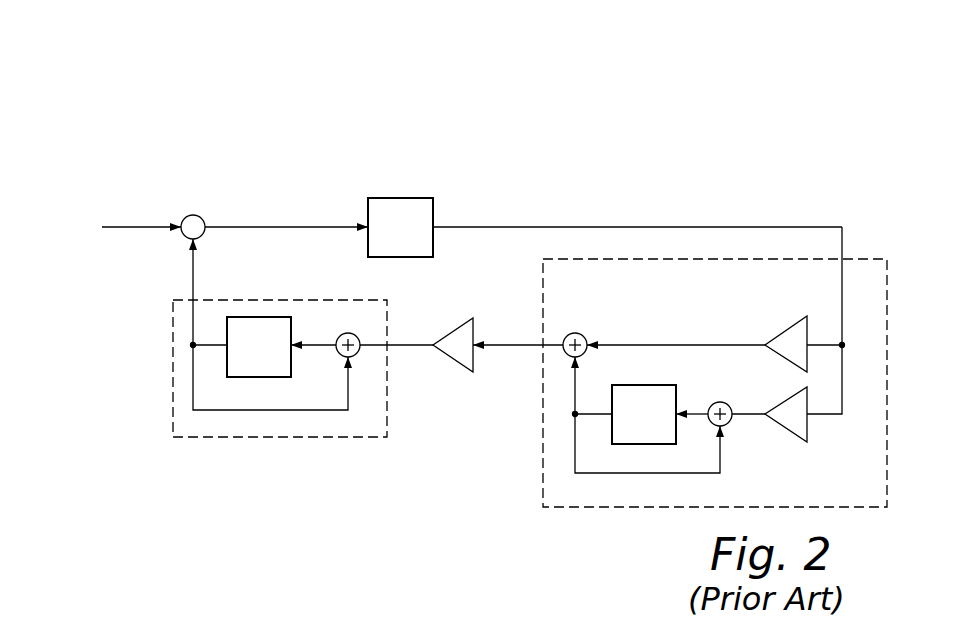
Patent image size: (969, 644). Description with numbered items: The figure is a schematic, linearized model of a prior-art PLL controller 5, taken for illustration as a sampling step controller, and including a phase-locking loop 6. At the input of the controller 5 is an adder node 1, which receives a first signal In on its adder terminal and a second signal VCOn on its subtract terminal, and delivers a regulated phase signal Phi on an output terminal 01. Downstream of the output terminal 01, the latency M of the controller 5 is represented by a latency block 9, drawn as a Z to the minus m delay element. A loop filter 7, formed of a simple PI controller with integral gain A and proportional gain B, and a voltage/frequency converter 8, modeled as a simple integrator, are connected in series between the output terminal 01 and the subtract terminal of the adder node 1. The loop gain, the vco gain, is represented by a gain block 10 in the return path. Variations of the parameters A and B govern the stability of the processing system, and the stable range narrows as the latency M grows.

The PLL controller 5 is at (508, 110).
The adder node 1 is at (196, 222).
The output terminal 01 is at (204, 236).
The latency block 9 is at (396, 210).
The phase-locking loop 6 is at (473, 242).
The loop filter 7 is at (752, 272).
The voltage/frequency converter 8 is at (227, 437).
The gain block 10 is at (455, 342).